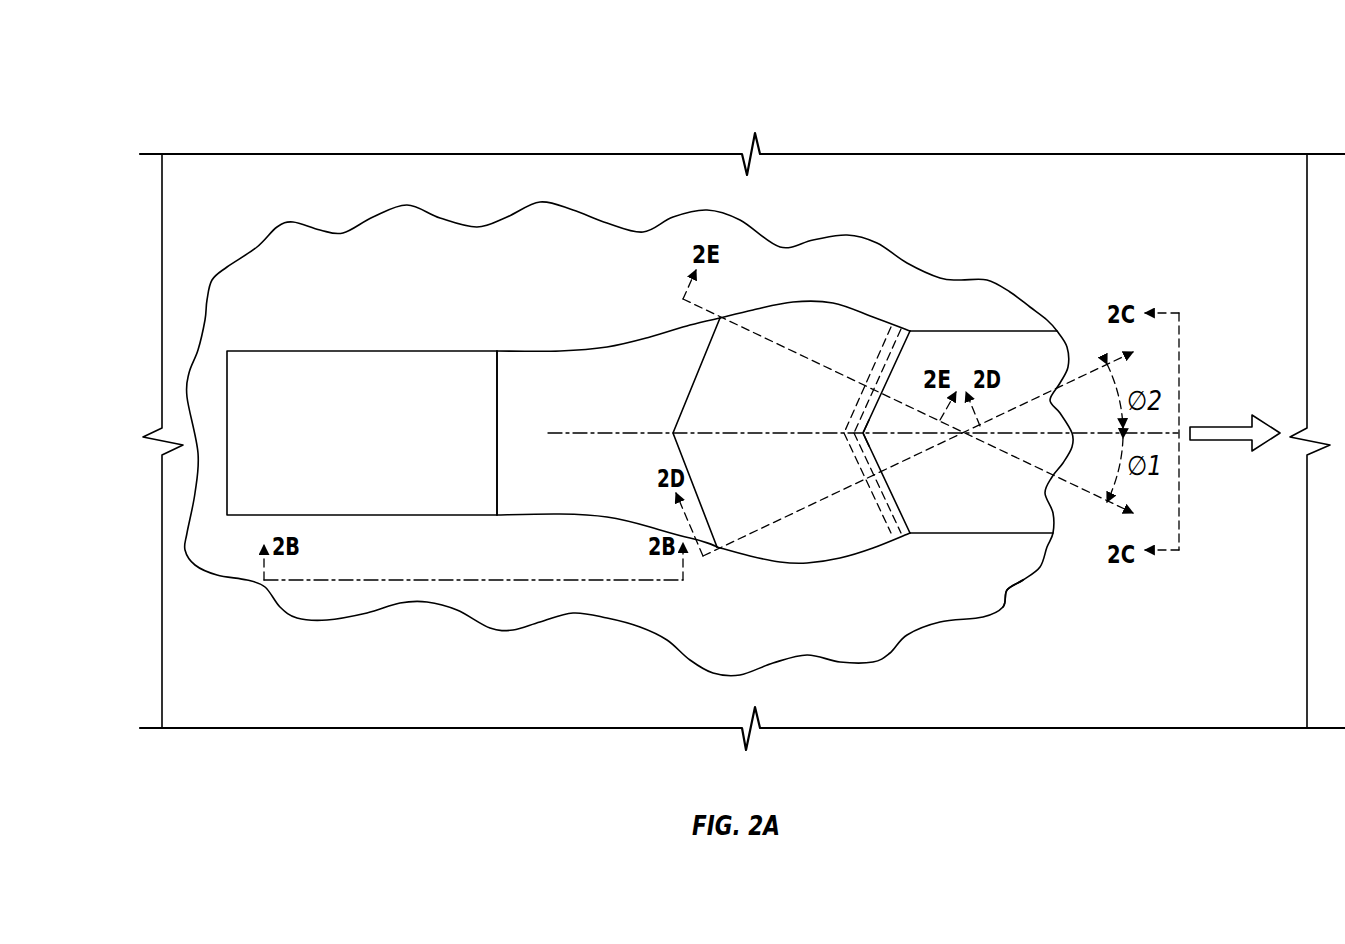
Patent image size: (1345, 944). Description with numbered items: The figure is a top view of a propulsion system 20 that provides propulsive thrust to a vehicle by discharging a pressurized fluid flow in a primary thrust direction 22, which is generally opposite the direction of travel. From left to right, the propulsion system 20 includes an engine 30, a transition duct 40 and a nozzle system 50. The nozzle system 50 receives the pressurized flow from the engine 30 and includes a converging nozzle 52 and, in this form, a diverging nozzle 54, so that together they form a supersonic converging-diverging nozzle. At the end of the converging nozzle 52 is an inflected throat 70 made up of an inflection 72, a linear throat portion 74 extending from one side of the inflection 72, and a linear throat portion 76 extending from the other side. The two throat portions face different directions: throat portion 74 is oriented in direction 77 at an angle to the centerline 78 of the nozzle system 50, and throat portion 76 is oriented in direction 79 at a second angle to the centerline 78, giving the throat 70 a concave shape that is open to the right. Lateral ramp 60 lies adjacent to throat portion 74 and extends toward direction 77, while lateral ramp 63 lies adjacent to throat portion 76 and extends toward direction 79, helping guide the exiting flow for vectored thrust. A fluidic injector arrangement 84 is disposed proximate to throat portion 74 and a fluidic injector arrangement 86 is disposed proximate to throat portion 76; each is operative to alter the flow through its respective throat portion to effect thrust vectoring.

The propulsion system 20 is at (322, 88).
The primary thrust direction 22 is at (1212, 441).
The engine 30 is at (369, 447).
The transition duct 40 is at (594, 407).
The nozzle system 50 is at (702, 637).
The nozzle 52 is at (769, 486).
The diverging nozzle 54 is at (1011, 546).
The ramp 60 is at (832, 563).
The ramp 63 is at (835, 302).
The inflected throat 70 is at (1031, 417).
The inflection 72 is at (878, 442).
The throat portion 74 is at (940, 513).
The throat portion 76 is at (940, 348).
The direction 77 is at (1132, 354).
The centerline 78 is at (770, 432).
The direction 79 is at (1120, 512).
The fluidic injector arrangement 84 is at (875, 500).
The fluidic injector arrangement 86 is at (887, 347).